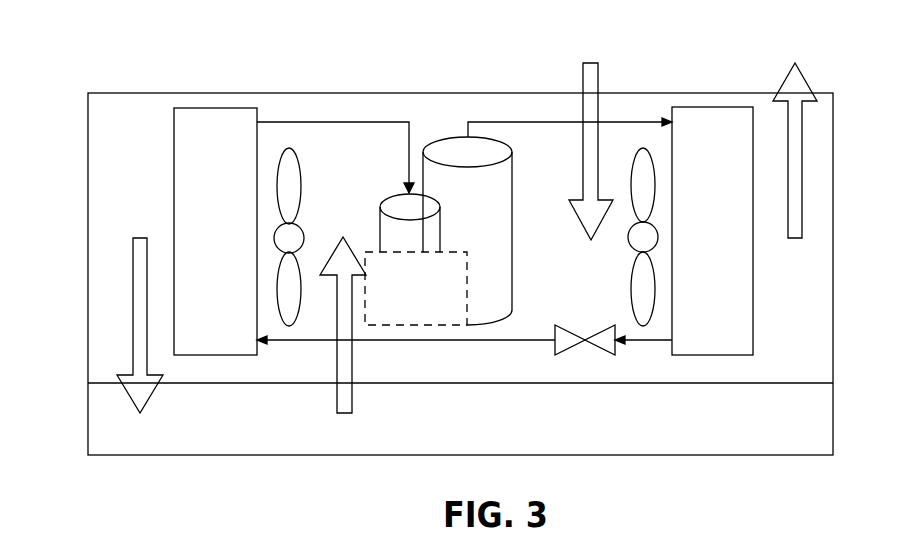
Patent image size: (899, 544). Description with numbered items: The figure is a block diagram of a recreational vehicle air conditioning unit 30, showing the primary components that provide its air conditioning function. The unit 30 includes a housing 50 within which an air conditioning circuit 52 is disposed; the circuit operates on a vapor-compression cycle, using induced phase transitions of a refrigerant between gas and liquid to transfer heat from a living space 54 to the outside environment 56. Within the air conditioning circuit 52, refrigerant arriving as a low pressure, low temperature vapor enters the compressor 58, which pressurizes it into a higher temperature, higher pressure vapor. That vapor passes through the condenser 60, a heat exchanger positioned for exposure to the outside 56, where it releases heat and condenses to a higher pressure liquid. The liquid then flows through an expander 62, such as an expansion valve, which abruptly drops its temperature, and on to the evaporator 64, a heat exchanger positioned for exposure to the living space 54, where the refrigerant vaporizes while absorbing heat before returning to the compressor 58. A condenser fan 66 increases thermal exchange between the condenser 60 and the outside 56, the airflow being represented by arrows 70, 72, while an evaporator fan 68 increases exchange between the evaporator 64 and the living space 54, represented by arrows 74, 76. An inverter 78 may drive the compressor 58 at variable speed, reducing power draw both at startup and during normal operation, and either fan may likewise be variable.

The recreational vehicle air conditioning unit 30 is at (84, 124).
The housing 50 is at (88, 252).
The air conditioning circuit 52 is at (158, 153).
The living space 54 is at (643, 432).
The outside environment 56 is at (497, 70).
The compressor 58 is at (513, 193).
The condenser 60 is at (743, 325).
The expander 62 is at (594, 336).
The evaporator 64 is at (182, 223).
The condenser fan 66 is at (640, 305).
The evaporator fan 68 is at (293, 195).
The arrow 70 is at (583, 78).
The arrow 72 is at (787, 78).
The arrow 74 is at (337, 365).
The arrow 76 is at (133, 355).
The inverter 78 is at (429, 316).